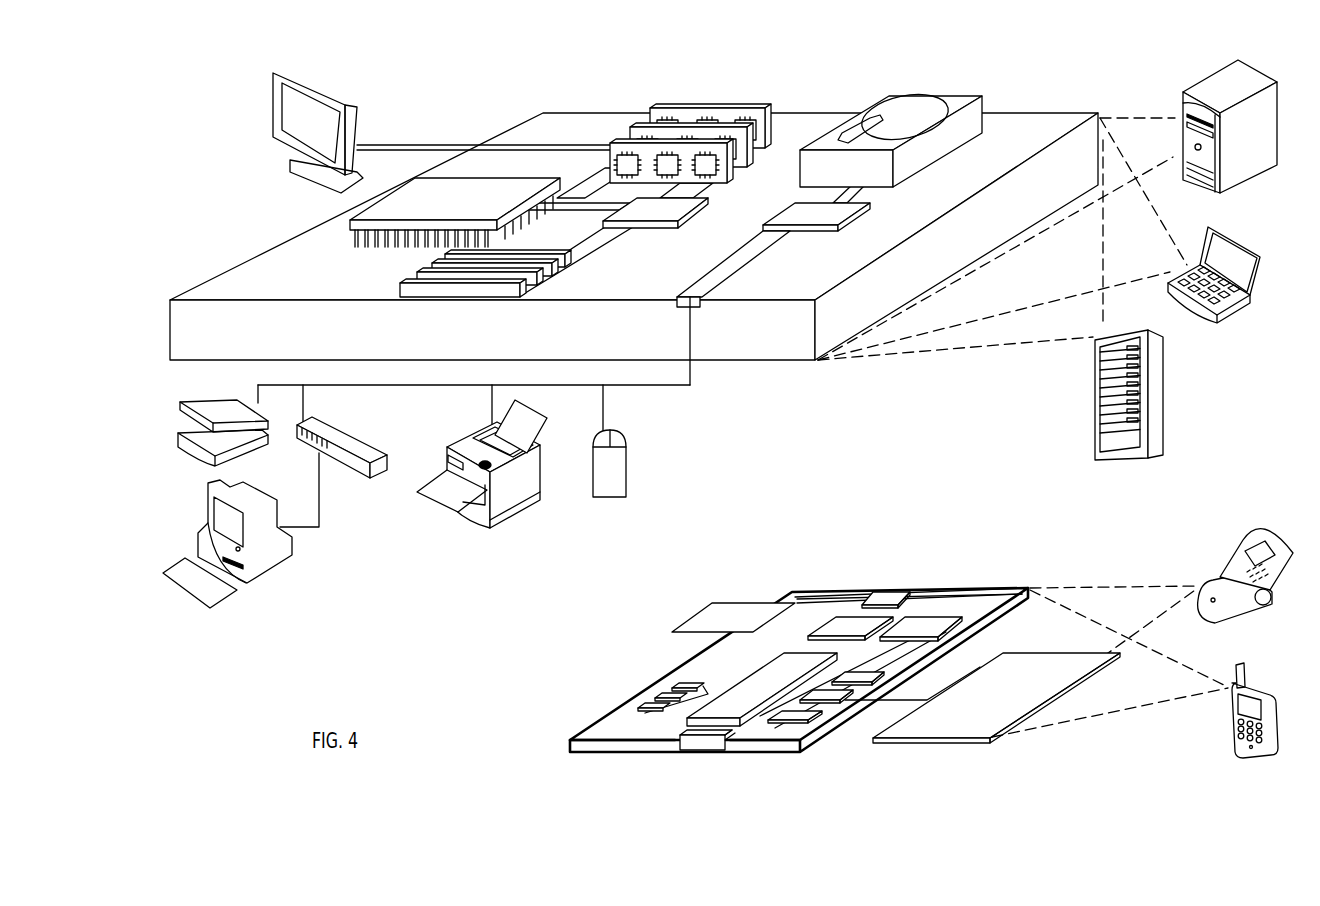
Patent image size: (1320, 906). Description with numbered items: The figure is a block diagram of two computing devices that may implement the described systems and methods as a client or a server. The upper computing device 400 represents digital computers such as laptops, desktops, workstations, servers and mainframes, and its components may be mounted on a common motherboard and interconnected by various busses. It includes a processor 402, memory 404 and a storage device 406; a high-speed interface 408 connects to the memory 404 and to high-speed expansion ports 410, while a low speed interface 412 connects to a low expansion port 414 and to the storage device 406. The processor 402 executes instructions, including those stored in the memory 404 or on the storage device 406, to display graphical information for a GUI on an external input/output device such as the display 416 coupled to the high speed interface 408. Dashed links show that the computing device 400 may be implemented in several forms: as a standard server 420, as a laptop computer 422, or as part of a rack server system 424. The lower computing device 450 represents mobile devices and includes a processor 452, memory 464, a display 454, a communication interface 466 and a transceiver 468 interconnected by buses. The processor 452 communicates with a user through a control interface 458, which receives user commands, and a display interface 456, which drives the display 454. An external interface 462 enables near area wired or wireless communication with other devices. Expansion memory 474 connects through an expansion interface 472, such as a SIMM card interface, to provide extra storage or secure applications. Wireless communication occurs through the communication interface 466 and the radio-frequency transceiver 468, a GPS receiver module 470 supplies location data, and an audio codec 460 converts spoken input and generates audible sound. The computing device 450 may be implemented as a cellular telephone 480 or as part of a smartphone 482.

The computing device 400 is at (473, 80).
The processor 402 is at (348, 232).
The memory 404 is at (655, 83).
The storage device 406 is at (882, 93).
The high-speed interface 408 is at (633, 207).
The high-speed expansion ports 410 is at (425, 276).
The low speed interface 412 is at (817, 213).
The low expansion port 414 is at (700, 306).
The display 416 is at (273, 74).
The standard server 420 is at (1183, 93).
The laptop computer 422 is at (1208, 226).
The rack server system 424 is at (1095, 416).
The computing device 450 is at (778, 556).
The processor 452 is at (738, 738).
The display 454 is at (993, 740).
The display interface 456 is at (810, 728).
The control interface 458 is at (843, 703).
The audio codec 460 is at (872, 688).
The external interface 462 is at (703, 742).
The memory 464 is at (660, 708).
The communication interface 466 is at (847, 623).
The transceiver 468 is at (923, 622).
The GPS receiver module 470 is at (897, 590).
The expansion interface 472 is at (790, 596).
The expansion memory 474 is at (706, 602).
The cellular telephone 480 is at (1250, 532).
The smartphone 482 is at (1237, 663).